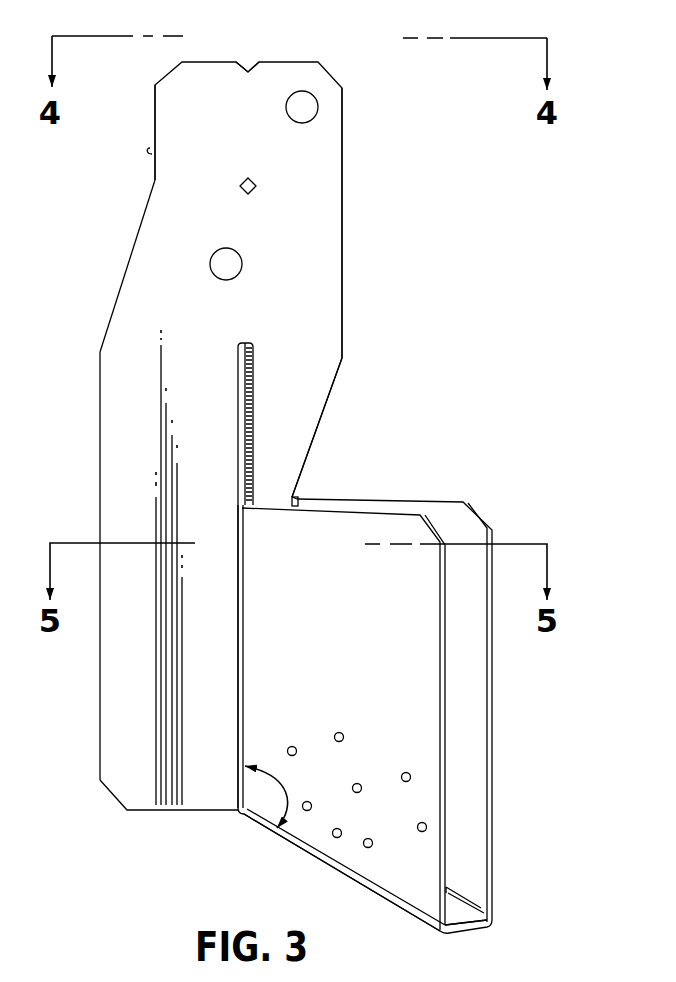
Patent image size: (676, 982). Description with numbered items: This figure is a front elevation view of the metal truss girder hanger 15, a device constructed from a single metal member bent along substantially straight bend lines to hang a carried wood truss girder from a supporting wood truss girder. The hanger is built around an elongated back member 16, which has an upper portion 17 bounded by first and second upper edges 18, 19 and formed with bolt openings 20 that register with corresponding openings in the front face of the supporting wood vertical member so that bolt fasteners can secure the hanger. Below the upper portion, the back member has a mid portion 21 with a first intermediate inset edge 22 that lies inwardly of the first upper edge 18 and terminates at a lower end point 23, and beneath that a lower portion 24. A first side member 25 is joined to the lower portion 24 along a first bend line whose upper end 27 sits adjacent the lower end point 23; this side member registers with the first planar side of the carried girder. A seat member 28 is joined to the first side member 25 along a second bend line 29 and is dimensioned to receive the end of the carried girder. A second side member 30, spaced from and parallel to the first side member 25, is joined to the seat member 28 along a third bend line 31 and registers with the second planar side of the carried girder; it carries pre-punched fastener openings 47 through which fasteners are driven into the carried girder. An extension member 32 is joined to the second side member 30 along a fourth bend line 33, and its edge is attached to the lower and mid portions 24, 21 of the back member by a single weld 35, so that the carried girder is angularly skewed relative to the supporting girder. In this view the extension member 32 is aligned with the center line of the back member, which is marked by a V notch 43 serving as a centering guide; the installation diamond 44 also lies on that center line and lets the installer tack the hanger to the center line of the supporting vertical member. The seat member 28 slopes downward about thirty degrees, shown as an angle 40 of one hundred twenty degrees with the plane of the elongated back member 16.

The metal truss girder hanger 15 is at (347, 97).
The elongated back member 16 is at (155, 118).
The upper portion 17 is at (208, 176).
The first upper edge 18 is at (338, 241).
The second upper edge 19 is at (150, 148).
The bolt openings 20 is at (238, 253).
The mid portion 21 is at (126, 420).
The first intermediate inset edge 22 is at (330, 405).
The lower end point 23 is at (292, 496).
The lower portion 24 is at (127, 727).
The first side member 25 is at (492, 672).
The upper end 27 is at (299, 500).
The seat member 28 is at (458, 920).
The second bend line 29 is at (463, 902).
The second side member 30 is at (337, 636).
The third bend line 31 is at (303, 851).
The extension member 32 is at (238, 440).
The fourth bend line 33 is at (244, 578).
The weld 35 is at (254, 373).
The angle 40 is at (283, 784).
The V notch 43 is at (247, 66).
The installation diamond 44 is at (240, 193).
The pre-punched fastener openings 47 is at (296, 748).